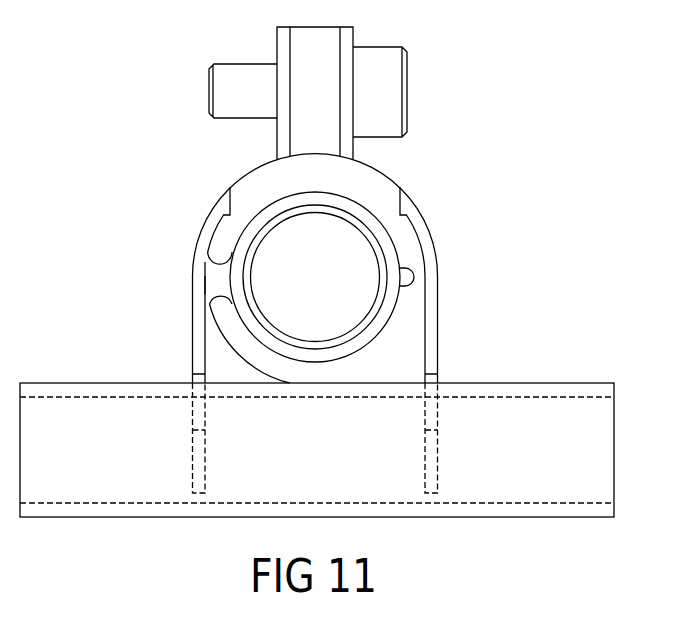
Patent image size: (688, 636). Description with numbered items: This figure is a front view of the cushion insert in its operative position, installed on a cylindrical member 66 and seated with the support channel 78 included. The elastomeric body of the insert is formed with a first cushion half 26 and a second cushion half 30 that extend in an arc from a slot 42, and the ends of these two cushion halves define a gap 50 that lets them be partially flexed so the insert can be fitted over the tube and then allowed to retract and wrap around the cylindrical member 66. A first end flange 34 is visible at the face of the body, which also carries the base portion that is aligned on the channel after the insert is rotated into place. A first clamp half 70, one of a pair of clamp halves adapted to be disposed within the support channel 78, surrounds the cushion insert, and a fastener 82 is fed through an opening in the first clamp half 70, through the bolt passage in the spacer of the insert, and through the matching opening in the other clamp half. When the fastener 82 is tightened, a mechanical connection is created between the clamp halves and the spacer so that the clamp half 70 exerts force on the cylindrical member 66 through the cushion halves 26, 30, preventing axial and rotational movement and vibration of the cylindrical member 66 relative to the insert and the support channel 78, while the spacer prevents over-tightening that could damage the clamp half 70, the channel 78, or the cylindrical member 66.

The first cushion half 26 is at (222, 240).
The second cushion half 30 is at (223, 312).
The first end flange 34 is at (260, 178).
The slot 42 is at (408, 277).
The gap 50 is at (220, 275).
The cylindrical member 66 is at (377, 320).
The first clamp half 70 is at (432, 362).
The support channel 78 is at (107, 420).
The fastener 82 is at (380, 63).